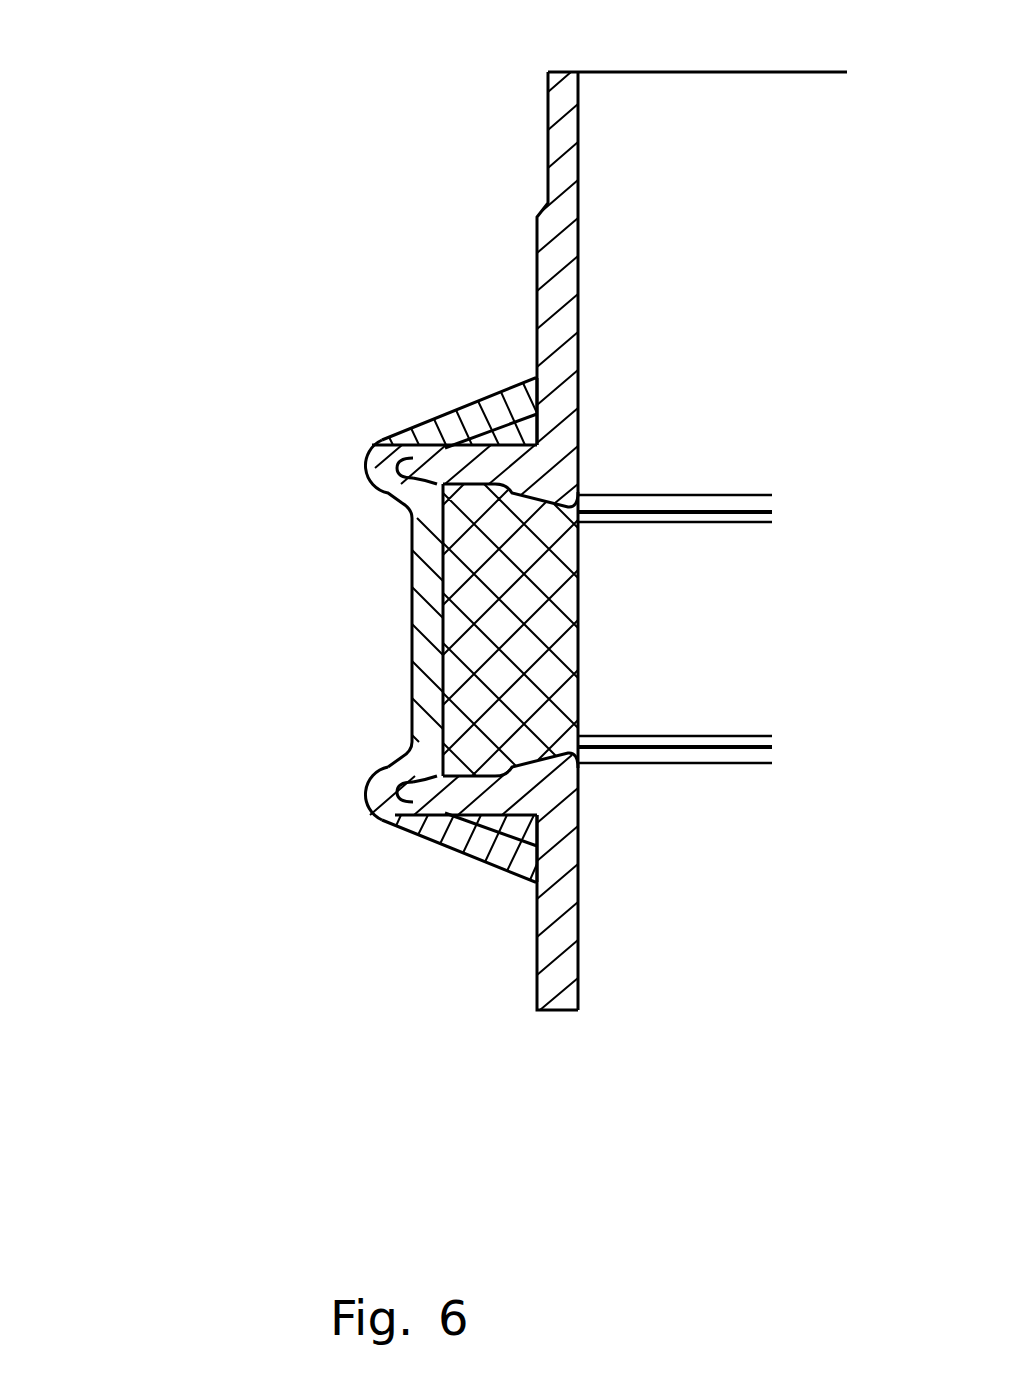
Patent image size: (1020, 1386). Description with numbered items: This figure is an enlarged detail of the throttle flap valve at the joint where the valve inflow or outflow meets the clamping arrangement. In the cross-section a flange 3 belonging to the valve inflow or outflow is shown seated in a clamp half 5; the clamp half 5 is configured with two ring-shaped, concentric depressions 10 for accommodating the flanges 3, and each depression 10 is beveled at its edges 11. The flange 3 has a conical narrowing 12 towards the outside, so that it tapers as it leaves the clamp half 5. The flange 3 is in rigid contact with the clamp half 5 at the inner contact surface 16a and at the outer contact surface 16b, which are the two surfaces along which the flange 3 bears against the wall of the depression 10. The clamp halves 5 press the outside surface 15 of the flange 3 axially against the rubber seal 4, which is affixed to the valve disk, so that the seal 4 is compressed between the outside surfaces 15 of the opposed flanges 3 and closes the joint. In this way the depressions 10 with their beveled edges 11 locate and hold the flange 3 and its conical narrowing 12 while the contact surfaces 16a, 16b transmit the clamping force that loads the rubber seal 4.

The flange 3 is at (497, 465).
The rubber seal 4 is at (555, 532).
The clamp half 5 is at (428, 583).
The depression 10 is at (403, 468).
The edge 11 is at (432, 432).
The conical narrowing 12 is at (400, 447).
The outside surface 15 is at (505, 745).
The inner contact surface 16a is at (452, 470).
The outer contact surface 16b is at (445, 455).